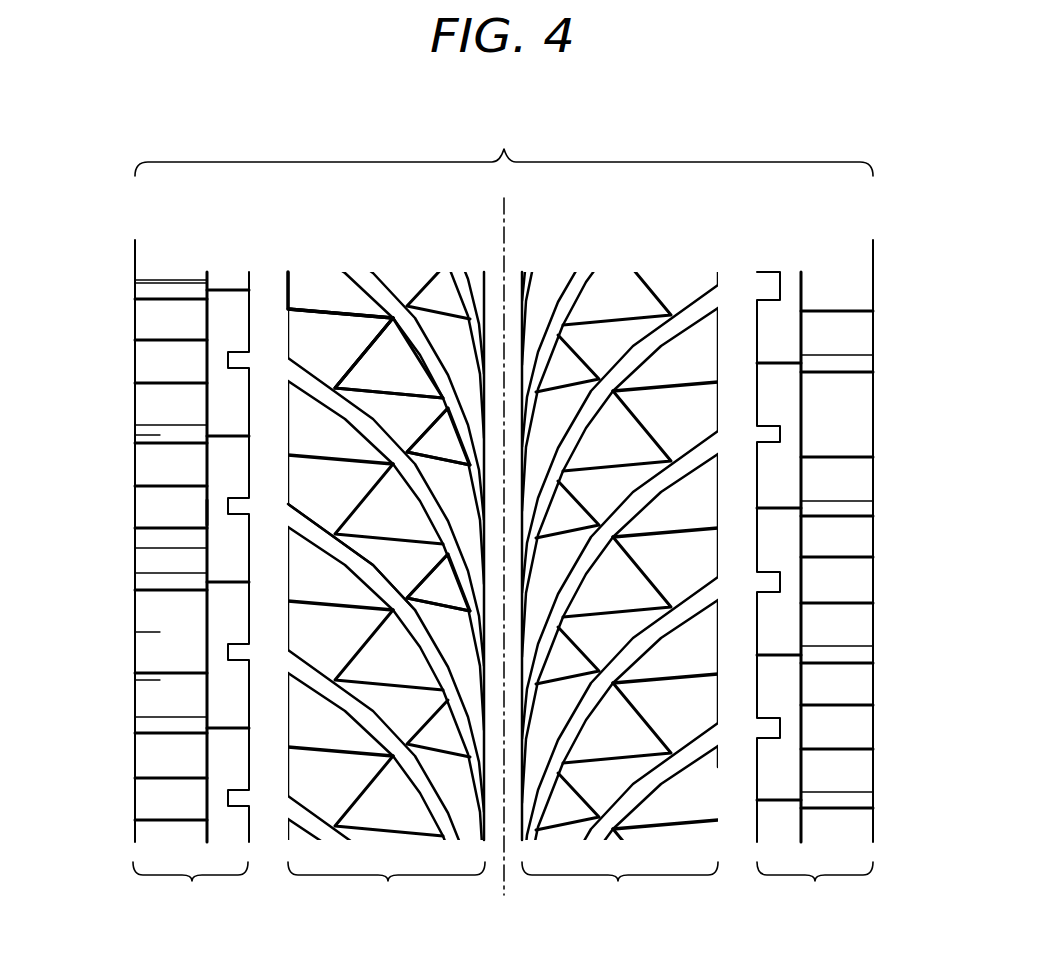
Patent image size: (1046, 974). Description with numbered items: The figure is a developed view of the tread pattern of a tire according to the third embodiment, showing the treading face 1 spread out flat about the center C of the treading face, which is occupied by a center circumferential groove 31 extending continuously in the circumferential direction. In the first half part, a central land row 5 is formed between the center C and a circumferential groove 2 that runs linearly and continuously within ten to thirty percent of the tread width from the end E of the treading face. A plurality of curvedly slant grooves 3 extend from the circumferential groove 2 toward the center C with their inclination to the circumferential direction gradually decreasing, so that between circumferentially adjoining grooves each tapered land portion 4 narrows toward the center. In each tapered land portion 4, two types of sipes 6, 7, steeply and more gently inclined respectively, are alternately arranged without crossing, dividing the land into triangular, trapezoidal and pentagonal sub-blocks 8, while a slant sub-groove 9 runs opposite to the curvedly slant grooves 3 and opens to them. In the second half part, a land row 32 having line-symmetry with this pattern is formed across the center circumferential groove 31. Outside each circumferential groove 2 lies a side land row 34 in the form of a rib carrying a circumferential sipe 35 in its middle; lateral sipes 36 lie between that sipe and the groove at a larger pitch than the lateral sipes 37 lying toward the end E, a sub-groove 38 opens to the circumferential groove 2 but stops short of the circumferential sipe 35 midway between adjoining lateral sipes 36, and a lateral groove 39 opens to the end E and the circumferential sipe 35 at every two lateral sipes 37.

The treading face 1 is at (504, 145).
The circumferential groove 2 is at (268, 835).
The curvedly slant groove 3 is at (424, 342).
The tapered land portion 4 is at (297, 574).
The central land row 5 is at (620, 487).
The first type sipe 6 is at (310, 303).
The second type sipe 7 is at (340, 358).
The sub-block 8 is at (351, 309).
The slant sub-groove 9 is at (432, 278).
The center circumferential groove 31 is at (508, 852).
The land row 32 is at (386, 520).
The side land row 34 is at (503, 595).
The circumferential sipe 35 is at (202, 514).
The lateral sipe 36 is at (236, 438).
The lateral sipe 37 is at (162, 633).
The sub-groove 38 is at (236, 353).
The lateral groove 39 is at (158, 436).
The center of the treading face C is at (503, 247).
The end of the treading face E is at (135, 310).